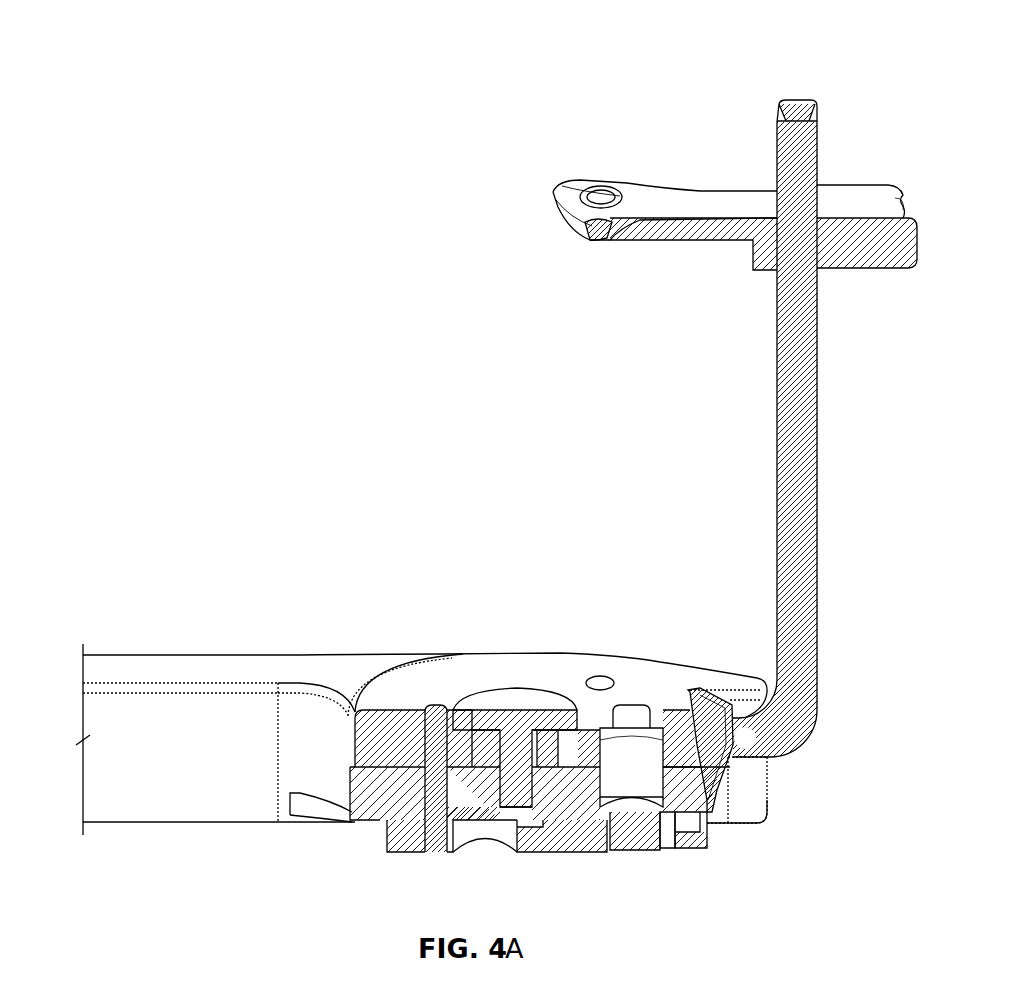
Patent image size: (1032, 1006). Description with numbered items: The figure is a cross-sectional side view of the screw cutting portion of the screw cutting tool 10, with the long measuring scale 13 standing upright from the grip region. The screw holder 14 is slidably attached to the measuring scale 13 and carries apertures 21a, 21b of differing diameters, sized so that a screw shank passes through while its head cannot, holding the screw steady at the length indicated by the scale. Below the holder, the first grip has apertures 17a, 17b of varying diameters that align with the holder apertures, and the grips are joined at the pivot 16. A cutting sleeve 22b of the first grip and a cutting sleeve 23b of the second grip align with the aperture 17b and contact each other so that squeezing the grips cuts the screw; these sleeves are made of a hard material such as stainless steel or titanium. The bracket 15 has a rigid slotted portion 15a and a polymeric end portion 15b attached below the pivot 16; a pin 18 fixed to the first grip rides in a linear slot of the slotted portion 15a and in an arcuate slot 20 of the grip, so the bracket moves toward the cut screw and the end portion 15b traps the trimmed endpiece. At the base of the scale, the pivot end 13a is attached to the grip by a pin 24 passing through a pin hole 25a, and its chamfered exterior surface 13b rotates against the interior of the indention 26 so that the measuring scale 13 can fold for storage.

The screw cutting tool 10 is at (294, 124).
The measuring scale 13 is at (779, 105).
The pivot end 13a is at (793, 727).
The exterior surface 13b is at (722, 713).
The screw holder 14 is at (732, 193).
The bracket 15 is at (405, 852).
The rigid slotted portion 15a is at (397, 837).
The polymeric end portion 15b is at (600, 852).
The pivot 16 is at (520, 702).
The aperture 17a is at (593, 675).
The aperture 17b is at (642, 712).
The pin 18 is at (417, 700).
The arcuate slot 20 is at (433, 702).
The aperture 21a is at (595, 190).
The aperture 21b is at (553, 192).
The cutting sleeve 22b is at (643, 743).
The cutting sleeve 23b is at (623, 780).
The pin 24 is at (752, 743).
The pin hole 25a is at (750, 745).
The indention 26 is at (733, 695).